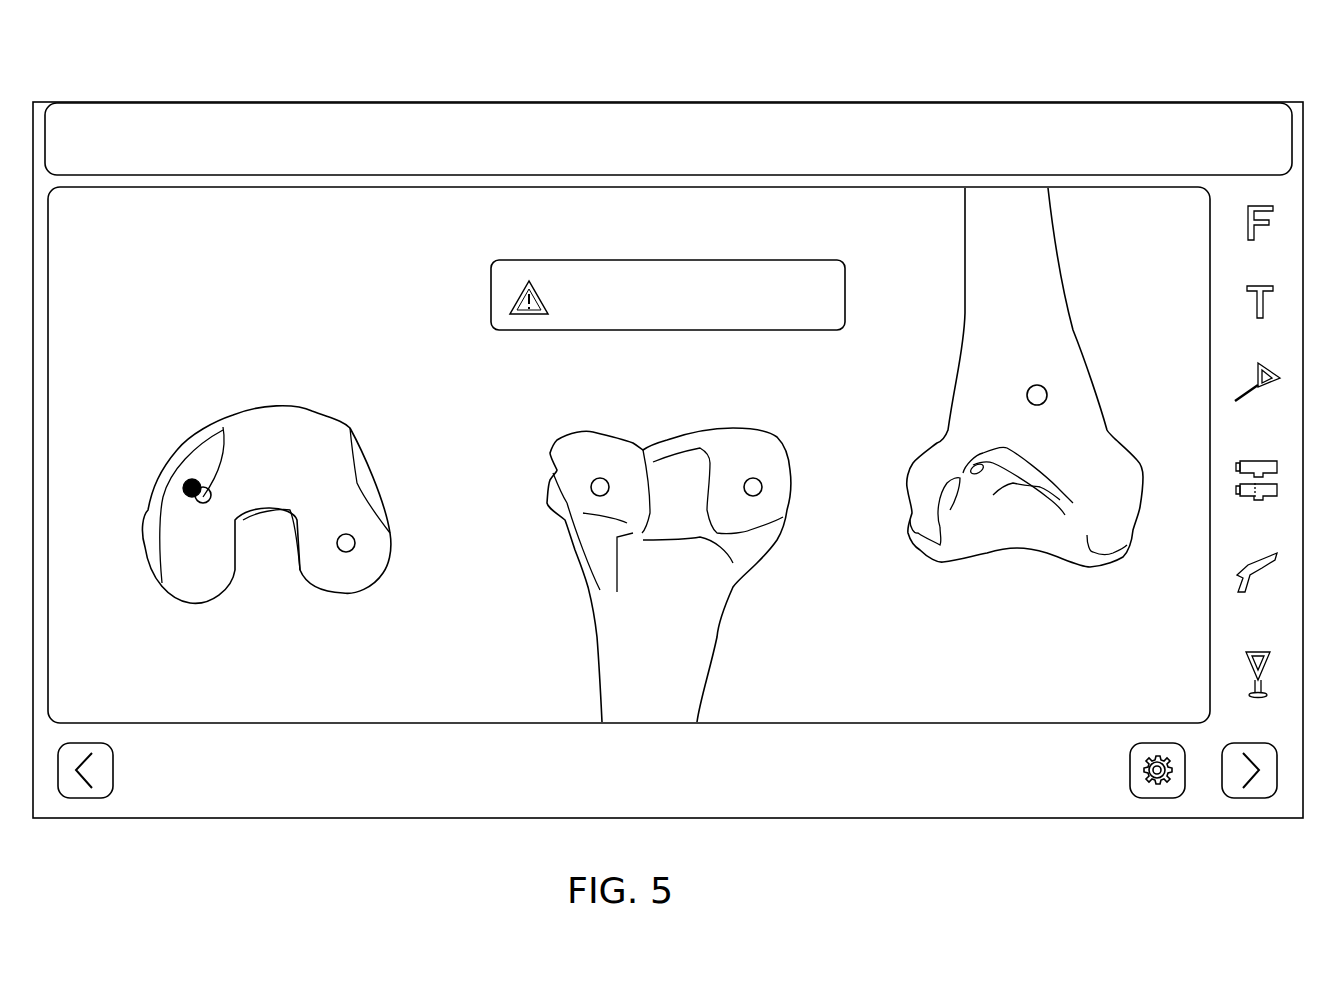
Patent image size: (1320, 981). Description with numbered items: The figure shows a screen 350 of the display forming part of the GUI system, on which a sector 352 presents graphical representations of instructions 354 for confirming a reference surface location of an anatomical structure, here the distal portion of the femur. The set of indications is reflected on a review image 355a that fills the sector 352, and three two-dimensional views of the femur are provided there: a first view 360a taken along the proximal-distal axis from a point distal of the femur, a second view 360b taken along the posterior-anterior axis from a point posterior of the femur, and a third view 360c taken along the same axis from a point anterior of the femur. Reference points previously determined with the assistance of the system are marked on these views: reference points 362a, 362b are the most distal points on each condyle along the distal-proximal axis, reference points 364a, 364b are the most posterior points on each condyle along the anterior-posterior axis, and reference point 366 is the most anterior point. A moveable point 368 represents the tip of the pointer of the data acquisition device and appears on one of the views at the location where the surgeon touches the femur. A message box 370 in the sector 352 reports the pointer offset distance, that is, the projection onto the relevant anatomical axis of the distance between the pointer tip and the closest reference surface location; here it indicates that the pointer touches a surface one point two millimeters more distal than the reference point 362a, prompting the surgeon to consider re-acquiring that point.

The screen 350 is at (745, 100).
The sector 352 is at (1035, 187).
The instructions 354 is at (247, 278).
The review image 355a is at (1100, 187).
The first view 360a is at (262, 617).
The second view 360b is at (767, 628).
The third view 360c is at (1020, 590).
The reference point 362a is at (228, 432).
The reference point 362b is at (348, 553).
The reference point 364a is at (594, 478).
The reference point 364b is at (748, 478).
The reference point 366 is at (1047, 395).
The moveable point 368 is at (186, 482).
The message box 370 is at (540, 258).